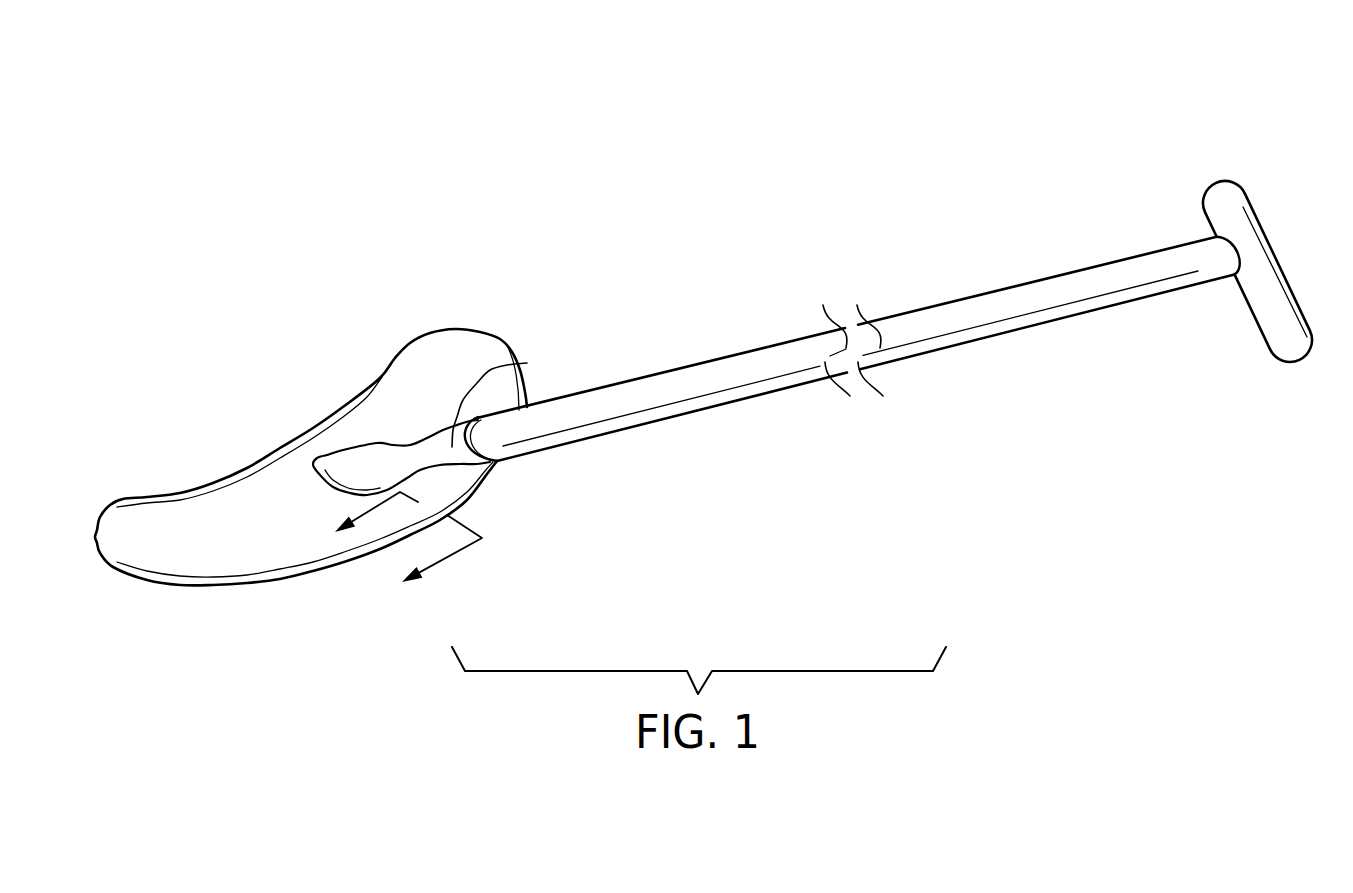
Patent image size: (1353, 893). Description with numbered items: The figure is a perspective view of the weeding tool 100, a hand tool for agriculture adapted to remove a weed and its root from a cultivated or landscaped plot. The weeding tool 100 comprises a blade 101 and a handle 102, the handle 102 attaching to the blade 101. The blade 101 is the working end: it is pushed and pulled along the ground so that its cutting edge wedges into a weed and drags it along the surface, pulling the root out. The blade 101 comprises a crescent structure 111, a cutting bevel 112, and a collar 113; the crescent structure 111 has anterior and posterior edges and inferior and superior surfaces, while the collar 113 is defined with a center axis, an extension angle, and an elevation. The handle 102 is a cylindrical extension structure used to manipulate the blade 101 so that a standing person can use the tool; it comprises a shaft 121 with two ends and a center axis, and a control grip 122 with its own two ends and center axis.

The weeding tool 100 is at (202, 154).
The blade 101 is at (420, 337).
The crescent structure 111 is at (448, 360).
The cutting bevel 112 is at (493, 492).
The collar 113 is at (527, 363).
The handle 102 is at (982, 293).
The shaft 121 is at (947, 343).
The control grip 122 is at (1248, 233).